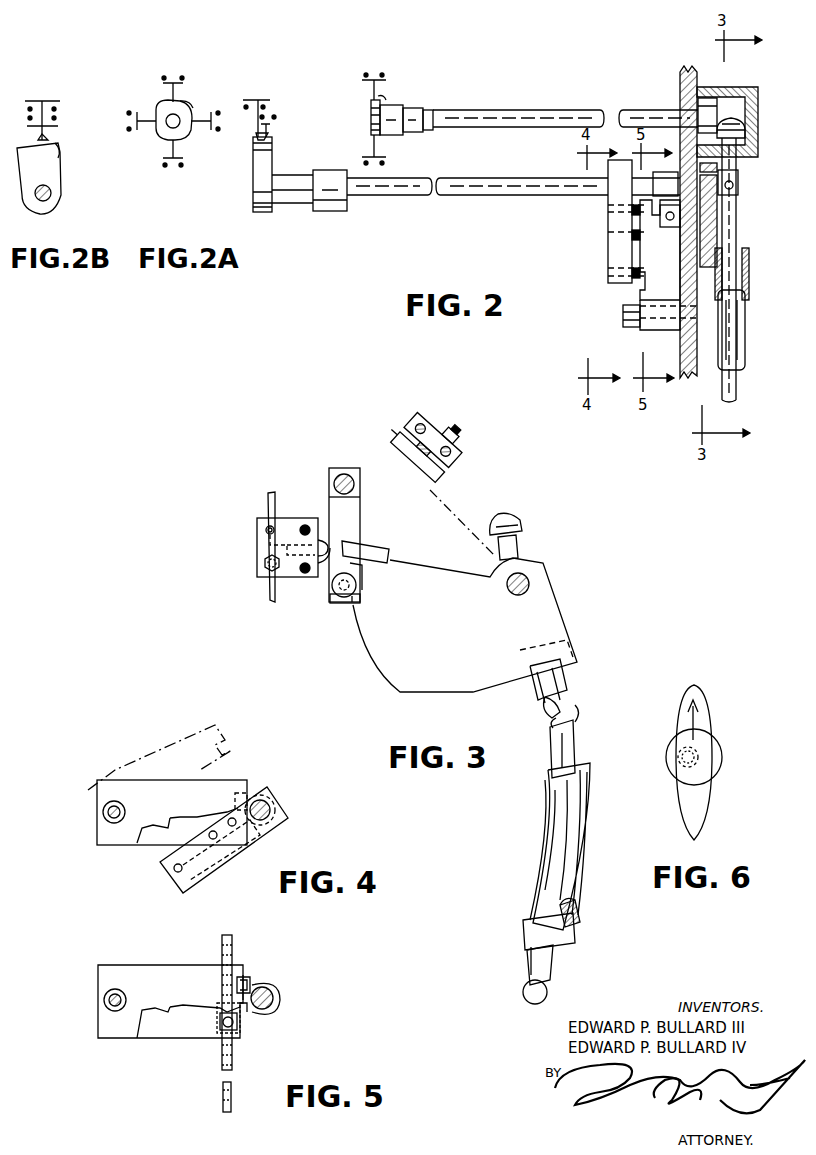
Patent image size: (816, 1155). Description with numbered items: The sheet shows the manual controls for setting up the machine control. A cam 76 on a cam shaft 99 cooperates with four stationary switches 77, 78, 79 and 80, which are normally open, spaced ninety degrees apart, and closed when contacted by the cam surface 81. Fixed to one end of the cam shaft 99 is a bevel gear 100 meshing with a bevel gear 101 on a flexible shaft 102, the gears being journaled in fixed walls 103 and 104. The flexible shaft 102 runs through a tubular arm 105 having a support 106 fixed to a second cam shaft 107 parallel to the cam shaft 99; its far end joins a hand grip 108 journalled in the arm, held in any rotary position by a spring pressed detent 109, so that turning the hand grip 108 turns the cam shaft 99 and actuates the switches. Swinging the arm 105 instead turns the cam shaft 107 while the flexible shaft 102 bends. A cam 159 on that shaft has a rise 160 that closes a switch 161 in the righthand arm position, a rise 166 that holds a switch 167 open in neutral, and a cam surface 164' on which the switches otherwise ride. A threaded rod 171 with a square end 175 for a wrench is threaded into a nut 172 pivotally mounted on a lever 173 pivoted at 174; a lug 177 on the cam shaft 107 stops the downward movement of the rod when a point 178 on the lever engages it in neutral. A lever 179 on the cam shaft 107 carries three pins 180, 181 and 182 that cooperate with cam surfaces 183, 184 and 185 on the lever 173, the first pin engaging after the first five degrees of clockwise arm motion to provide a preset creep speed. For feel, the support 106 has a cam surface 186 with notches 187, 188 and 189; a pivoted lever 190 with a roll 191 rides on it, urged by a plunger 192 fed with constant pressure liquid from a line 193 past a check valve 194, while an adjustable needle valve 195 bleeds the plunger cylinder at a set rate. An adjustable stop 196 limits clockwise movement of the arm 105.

In FIG. 2A, the cam 76 is at (160, 114).
In FIG. 2, the cam 76 is at (372, 118).
In FIG. 2A, the stationary switch 77 is at (170, 76).
In FIG. 2, the stationary switch 77 is at (375, 72).
In FIG. 2A, the stationary switch 78 is at (172, 168).
In FIG. 2, the stationary switch 78 is at (385, 166).
In FIG. 2A, the stationary switch 79 is at (124, 112).
In FIG. 2A, the stationary switch 80 is at (223, 112).
In FIG. 2A, the cam surface 81 is at (185, 106).
In FIG. 2, the cam surface 81 is at (384, 96).
In FIG. 2, the cam shaft 99 is at (538, 110).
In FIG. 2, the bevel gear 100 is at (706, 98).
In FIG. 2, the bevel gear 101 is at (744, 128).
In FIG. 3, the bevel gear 101 is at (524, 525).
In FIG. 2, the flexible shaft 102 is at (738, 382).
In FIG. 3, the flexible shaft 102 is at (567, 700).
In FIG. 2, the fixed wall 103 is at (683, 70).
In FIG. 2, the fixed wall 104 is at (752, 156).
In FIG. 2, the tubular arm 105 is at (749, 318).
In FIG. 3, the tubular arm 105 is at (587, 796).
In FIG. 2, the support 106 is at (712, 237).
In FIG. 3, the support 106 is at (556, 620).
In FIG. 2, the cam shaft 107 is at (493, 194).
In FIG. 3, the cam shaft 107 is at (524, 596).
In FIG. 4, the cam shaft 107 is at (272, 798).
In FIG. 5, the cam shaft 107 is at (279, 1003).
In FIG. 3, the hand grip 108 is at (545, 964).
In FIG. 6, the hand grip 108 is at (700, 694).
In FIG. 3, the spring pressed detent 109 is at (576, 921).
In FIG. 6, the spring pressed detent 109 is at (700, 776).
In FIG. 2B, the cam 159 is at (60, 190).
In FIG. 2, the cam 159 is at (254, 206).
In FIG. 2B, the rise 160 is at (58, 143).
In FIG. 2, the rise 160 is at (273, 138).
In FIG. 2B, the switch 161 is at (62, 102).
In FIG. 2, the switch 161 is at (271, 112).
In FIG. 2B, the cam surface 164' is at (61, 178).
In FIG. 2B, the rise 166 is at (46, 139).
In FIG. 2, the rise 166 is at (253, 140).
In FIG. 2B, the switch 167 is at (19, 106).
In FIG. 2, the switch 167 is at (258, 92).
In FIG. 5, the rod 171 is at (232, 940).
In FIG. 5, the nut 172 is at (240, 1045).
In FIG. 2, the lever 173 is at (655, 287).
In FIG. 4, the lever 173 is at (125, 782).
In FIG. 5, the lever 173 is at (145, 965).
In FIG. 2, the pivot 174 is at (630, 327).
In FIG. 4, the pivot 174 is at (103, 814).
In FIG. 5, the pivot 174 is at (104, 1001).
In FIG. 5, the square end 175 is at (232, 1110).
In FIG. 5, the lug 177 is at (252, 983).
In FIG. 5, the point 178 is at (250, 978).
In FIG. 2, the lever 179 is at (612, 258).
In FIG. 4, the lever 179 is at (205, 866).
In FIG. 2, the pin 180 is at (632, 210).
In FIG. 4, the pin 180 is at (240, 822).
In FIG. 2, the pin 181 is at (632, 236).
In FIG. 4, the pin 181 is at (220, 842).
In FIG. 2, the pin 182 is at (632, 278).
In FIG. 4, the pin 182 is at (178, 870).
In FIG. 4, the cam surface 183 is at (240, 780).
In FIG. 5, the cam surface 183 is at (244, 1005).
In FIG. 4, the cam surface 184 is at (205, 815).
In FIG. 5, the cam surface 184 is at (205, 1004).
In FIG. 4, the cam surface 185 is at (162, 816).
In FIG. 5, the cam surface 185 is at (162, 1004).
In FIG. 3, the cam surface 186 is at (386, 672).
In FIG. 3, the notch 187 is at (358, 570).
In FIG. 3, the notch 188 is at (361, 590).
In FIG. 3, the notch 189 is at (355, 604).
In FIG. 3, the pivoted lever 190 is at (329, 505).
In FIG. 3, the roll 191 is at (341, 600).
In FIG. 3, the plunger 192 is at (324, 580).
In FIG. 3, the line 193 is at (270, 500).
In FIG. 3, the check valve 194 is at (265, 530).
In FIG. 3, the adjustable needle valve 195 is at (264, 565).
In FIG. 3, the adjustable stop 196 is at (470, 431).